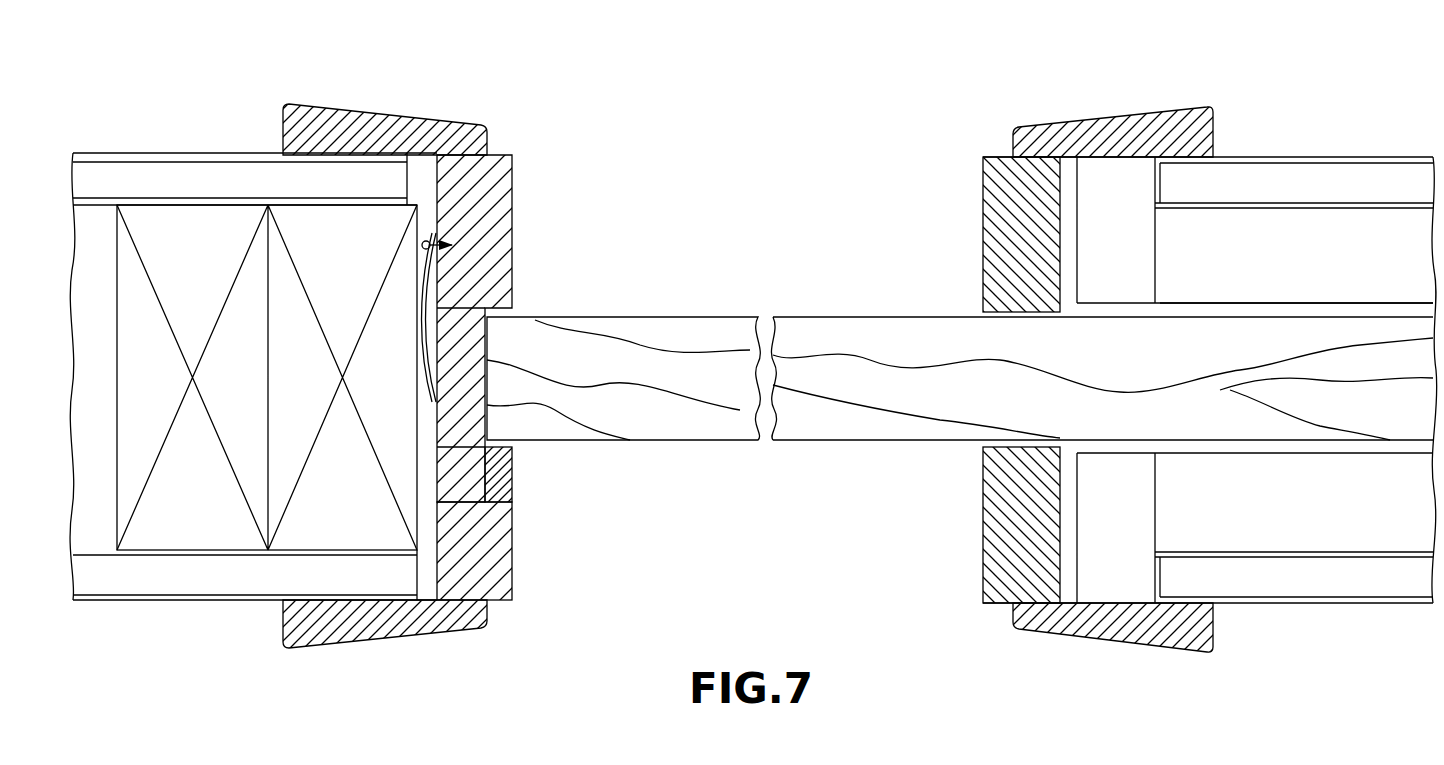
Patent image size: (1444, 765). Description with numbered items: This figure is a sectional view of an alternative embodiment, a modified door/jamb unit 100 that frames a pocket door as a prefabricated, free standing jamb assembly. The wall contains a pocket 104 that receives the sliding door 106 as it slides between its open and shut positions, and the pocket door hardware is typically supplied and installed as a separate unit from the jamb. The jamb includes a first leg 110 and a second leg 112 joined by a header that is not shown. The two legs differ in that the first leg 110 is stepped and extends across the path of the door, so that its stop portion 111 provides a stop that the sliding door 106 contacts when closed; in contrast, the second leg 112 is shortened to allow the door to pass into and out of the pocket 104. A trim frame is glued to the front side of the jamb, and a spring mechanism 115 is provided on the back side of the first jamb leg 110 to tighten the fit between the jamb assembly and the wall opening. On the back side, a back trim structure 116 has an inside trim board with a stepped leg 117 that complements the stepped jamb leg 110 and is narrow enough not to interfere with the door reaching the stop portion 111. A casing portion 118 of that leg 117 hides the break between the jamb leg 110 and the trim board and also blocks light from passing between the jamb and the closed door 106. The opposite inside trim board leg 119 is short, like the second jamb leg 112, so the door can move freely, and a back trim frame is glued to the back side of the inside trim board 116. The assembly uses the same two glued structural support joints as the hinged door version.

The door/jamb unit 100 is at (716, 163).
The pocket 104 is at (1326, 313).
The sliding door 106 is at (848, 317).
The first leg of jamb 110 is at (508, 224).
The stop portion 111 is at (445, 448).
The second leg of jamb 112 is at (992, 205).
The spring mechanism 115 is at (424, 325).
The back trim structure 116 is at (525, 598).
The inside trim board leg 117 is at (497, 555).
The casing portion 118 is at (512, 477).
The inside trim board leg 119 is at (992, 510).